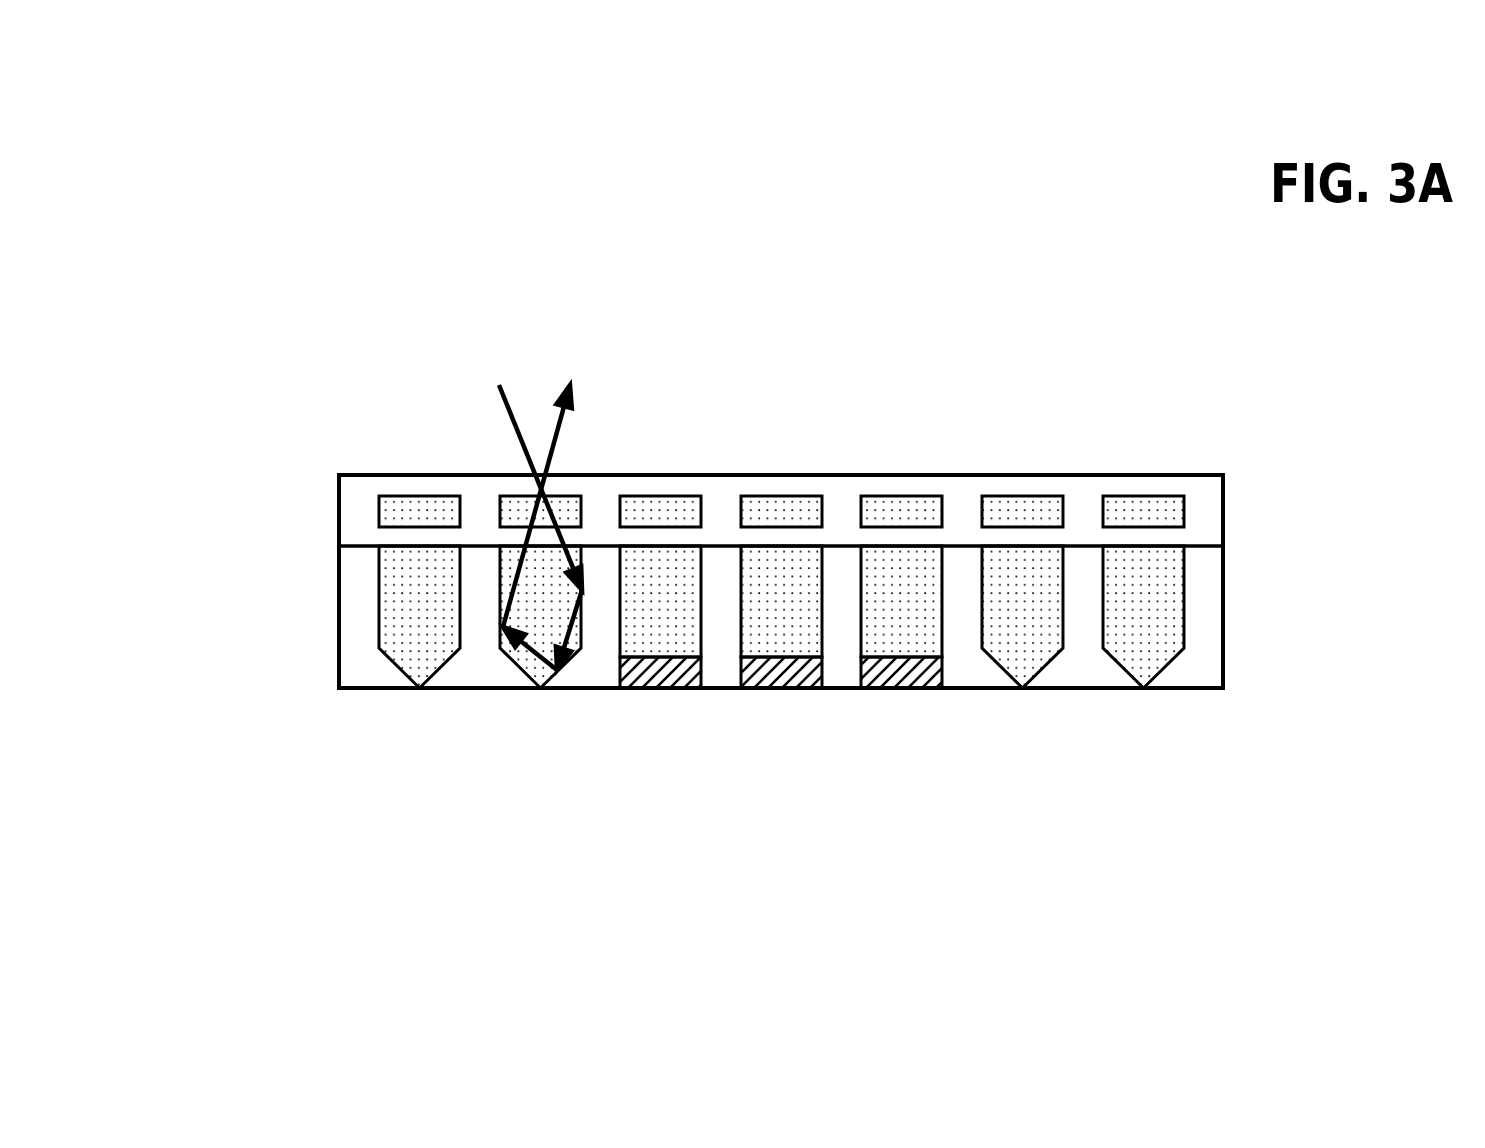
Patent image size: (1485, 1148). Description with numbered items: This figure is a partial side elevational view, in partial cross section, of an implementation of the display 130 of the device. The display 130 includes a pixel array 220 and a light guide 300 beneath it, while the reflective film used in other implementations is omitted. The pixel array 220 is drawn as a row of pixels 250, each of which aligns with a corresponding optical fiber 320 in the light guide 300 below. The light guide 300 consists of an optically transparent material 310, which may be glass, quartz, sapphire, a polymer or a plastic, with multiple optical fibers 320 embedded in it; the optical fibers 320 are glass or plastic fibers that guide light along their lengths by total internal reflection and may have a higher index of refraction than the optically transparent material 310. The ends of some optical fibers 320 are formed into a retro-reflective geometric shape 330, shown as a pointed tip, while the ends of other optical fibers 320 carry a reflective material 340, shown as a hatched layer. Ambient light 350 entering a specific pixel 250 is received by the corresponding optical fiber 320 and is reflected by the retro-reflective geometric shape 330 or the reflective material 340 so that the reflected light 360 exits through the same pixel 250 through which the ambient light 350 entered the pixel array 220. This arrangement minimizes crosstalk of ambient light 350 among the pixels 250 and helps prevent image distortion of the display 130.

The display 130 is at (222, 176).
The pixel array 220 is at (1223, 511).
The pixel 250 is at (1020, 507).
The light guide 300 is at (1223, 624).
The optically transparent material 310 is at (361, 606).
The optical fiber 320 is at (400, 566).
The retro-reflective geometric shape 330 is at (1020, 673).
The reflective material 340 is at (663, 673).
The ambient light 350 is at (525, 438).
The reflected light 360 is at (567, 408).